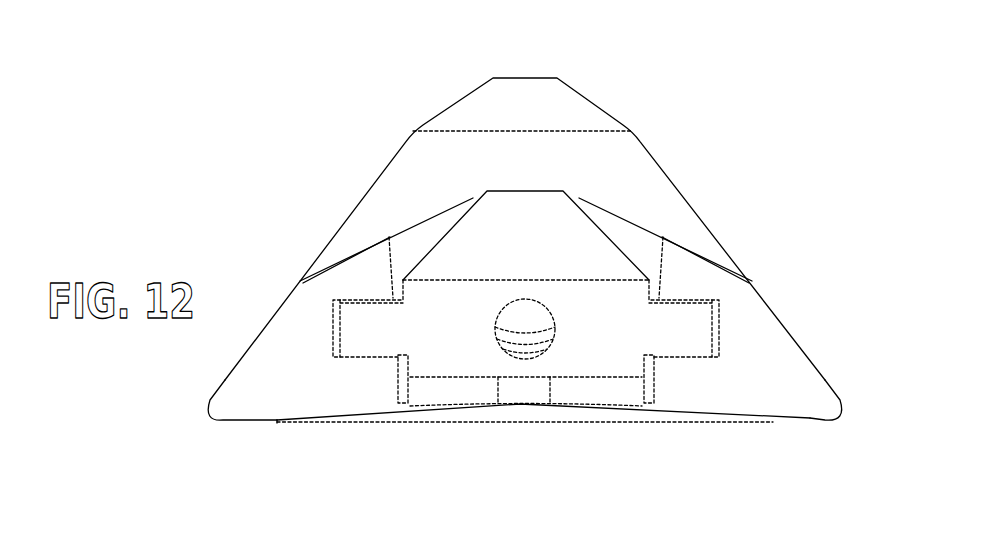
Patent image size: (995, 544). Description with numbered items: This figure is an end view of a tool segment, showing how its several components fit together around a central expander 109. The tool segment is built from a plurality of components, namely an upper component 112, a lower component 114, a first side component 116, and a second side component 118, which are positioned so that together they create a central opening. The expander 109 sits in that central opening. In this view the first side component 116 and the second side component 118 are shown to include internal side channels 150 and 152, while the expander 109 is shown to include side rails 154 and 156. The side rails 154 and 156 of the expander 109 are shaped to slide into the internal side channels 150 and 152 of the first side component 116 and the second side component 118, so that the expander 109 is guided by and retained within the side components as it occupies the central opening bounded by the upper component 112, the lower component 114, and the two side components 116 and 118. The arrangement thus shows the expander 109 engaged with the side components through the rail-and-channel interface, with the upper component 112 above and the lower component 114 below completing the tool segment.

The upper component 112 is at (502, 155).
The expander 109 is at (608, 370).
The lower component 114 is at (352, 425).
The first side component 116 is at (241, 422).
The second side component 118 is at (810, 425).
The internal side channel 150 is at (347, 357).
The internal side channel 152 is at (713, 355).
The side rail 154 is at (672, 318).
The side rail 156 is at (380, 318).